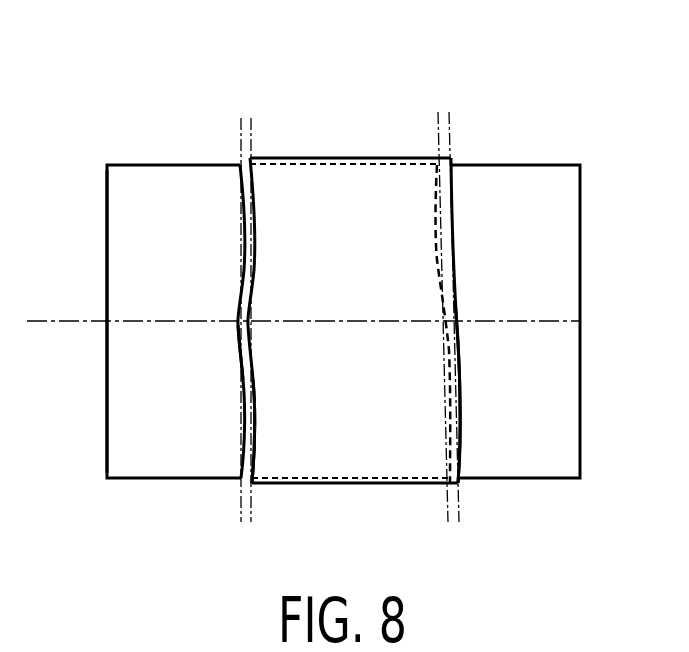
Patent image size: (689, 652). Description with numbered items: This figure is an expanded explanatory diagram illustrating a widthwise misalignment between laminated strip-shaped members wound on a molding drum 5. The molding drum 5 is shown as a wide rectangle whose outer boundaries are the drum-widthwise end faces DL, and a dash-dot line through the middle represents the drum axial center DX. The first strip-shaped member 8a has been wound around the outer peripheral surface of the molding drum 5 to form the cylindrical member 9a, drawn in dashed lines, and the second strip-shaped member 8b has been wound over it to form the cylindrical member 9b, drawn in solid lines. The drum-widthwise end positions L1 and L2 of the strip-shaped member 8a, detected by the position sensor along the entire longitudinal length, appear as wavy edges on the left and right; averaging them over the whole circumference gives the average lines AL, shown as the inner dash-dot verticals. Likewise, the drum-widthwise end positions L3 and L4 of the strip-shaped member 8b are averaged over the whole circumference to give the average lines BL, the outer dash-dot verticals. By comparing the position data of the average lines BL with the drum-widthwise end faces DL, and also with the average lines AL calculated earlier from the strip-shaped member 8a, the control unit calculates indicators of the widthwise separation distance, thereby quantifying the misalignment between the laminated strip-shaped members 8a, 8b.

The molding drum 5 is at (148, 178).
The drum-widthwise end faces DL is at (105, 248).
The drum axial center DX is at (53, 320).
The average lines AL is at (238, 130).
The average lines BL is at (251, 118).
The cylindrical member 9a is at (293, 167).
The cylindrical member 9b is at (373, 160).
The strip-shaped member 8a is at (243, 300).
The strip-shaped member 8b is at (422, 240).
The drum-widthwise end position L1 is at (237, 340).
The drum-widthwise end position L2 is at (450, 375).
The drum-widthwise end position L3 is at (252, 407).
The drum-widthwise end position L4 is at (462, 430).